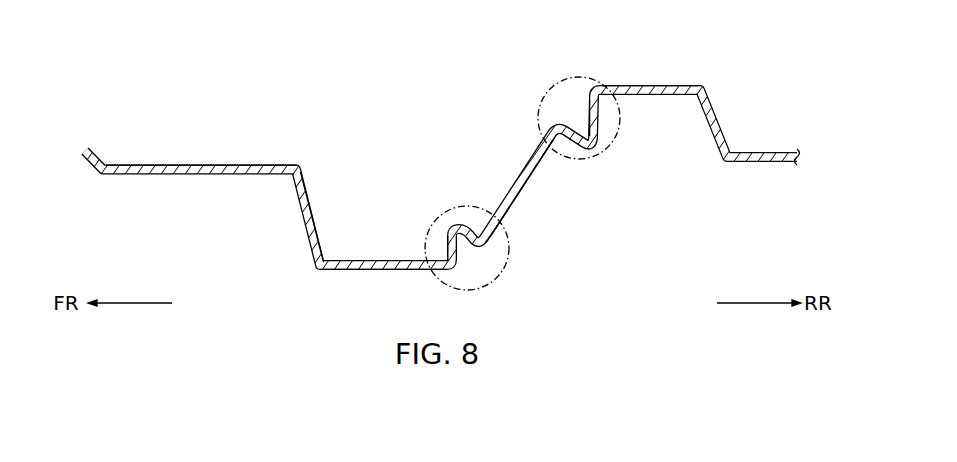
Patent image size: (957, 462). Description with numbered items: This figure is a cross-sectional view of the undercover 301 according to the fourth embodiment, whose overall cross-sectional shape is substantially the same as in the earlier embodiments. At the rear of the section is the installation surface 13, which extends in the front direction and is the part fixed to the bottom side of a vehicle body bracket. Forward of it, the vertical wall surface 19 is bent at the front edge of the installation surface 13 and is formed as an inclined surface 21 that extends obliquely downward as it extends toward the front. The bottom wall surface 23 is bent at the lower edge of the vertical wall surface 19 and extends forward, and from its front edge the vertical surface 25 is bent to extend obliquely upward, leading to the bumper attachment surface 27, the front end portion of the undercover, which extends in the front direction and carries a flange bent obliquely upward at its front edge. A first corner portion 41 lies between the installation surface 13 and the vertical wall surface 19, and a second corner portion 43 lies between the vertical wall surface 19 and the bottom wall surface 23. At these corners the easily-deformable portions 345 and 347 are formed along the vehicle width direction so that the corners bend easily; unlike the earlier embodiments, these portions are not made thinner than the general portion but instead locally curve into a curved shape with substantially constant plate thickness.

The undercover 301 is at (231, 121).
The bumper attachment surface 27 is at (170, 164).
The vertical surface 25 is at (300, 218).
The bottom wall surface 23 is at (360, 271).
The second corner portion 43 is at (442, 217).
The easily-deformable portion 347 is at (461, 244).
The inclined surface 21 is at (521, 192).
The vertical wall surface 19 is at (568, 208).
The first corner portion 41 is at (581, 75).
The easily-deformable portion 345 is at (585, 130).
The installation surface 13 is at (667, 85).